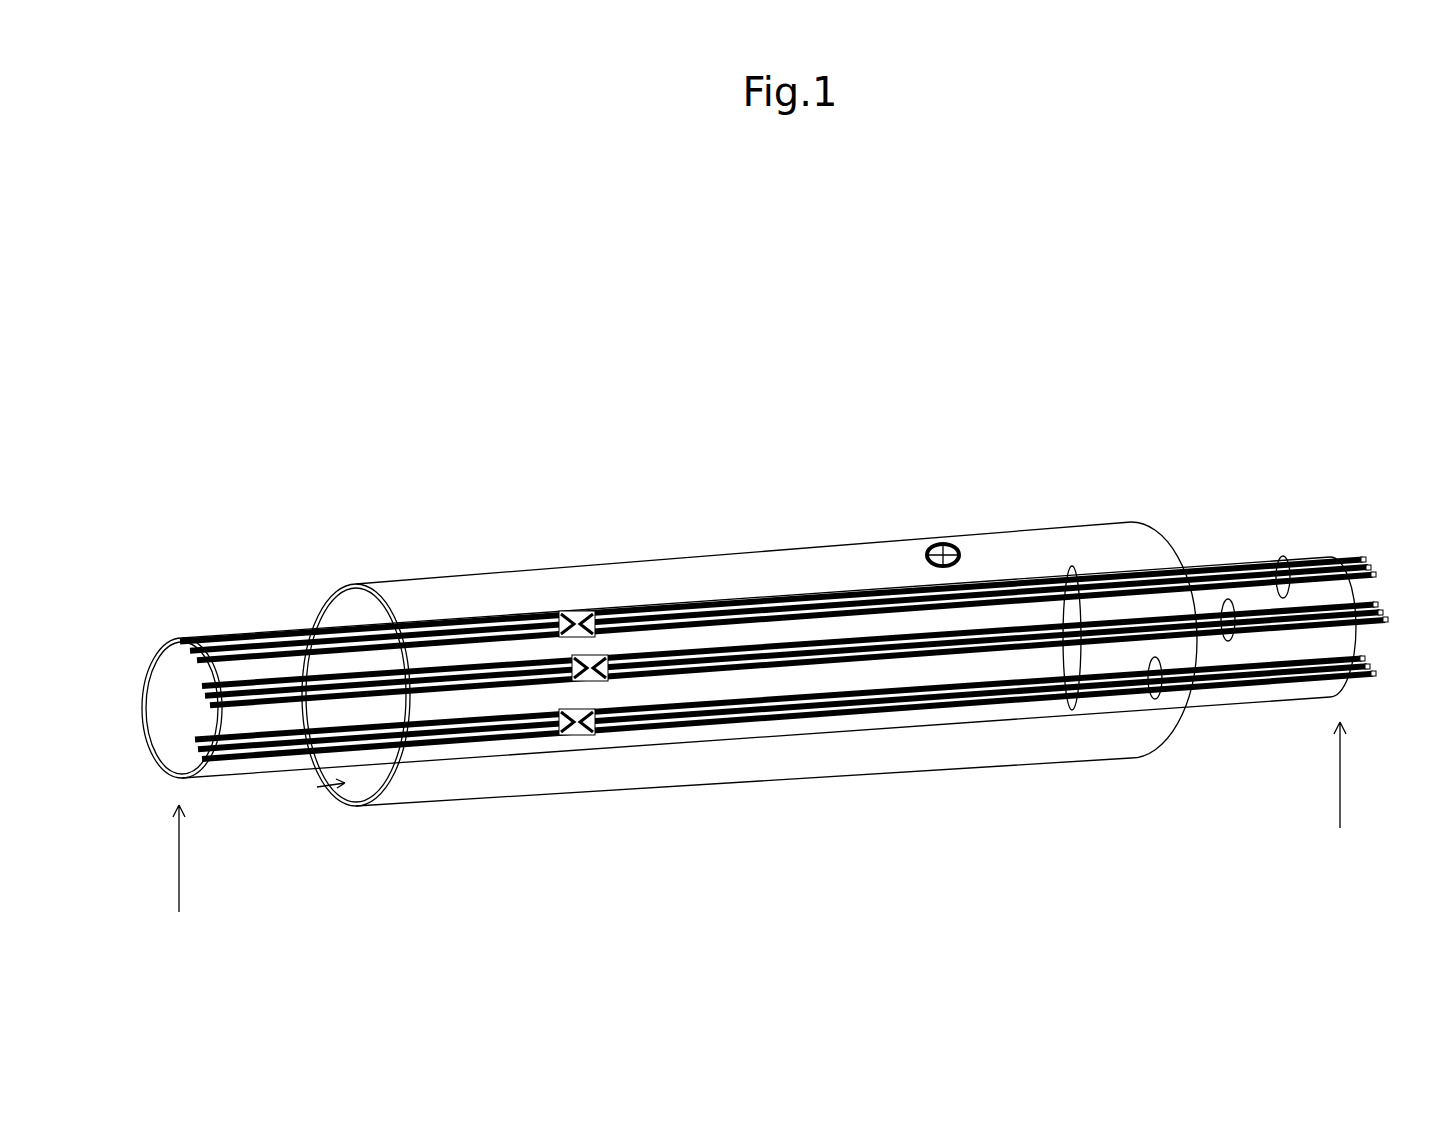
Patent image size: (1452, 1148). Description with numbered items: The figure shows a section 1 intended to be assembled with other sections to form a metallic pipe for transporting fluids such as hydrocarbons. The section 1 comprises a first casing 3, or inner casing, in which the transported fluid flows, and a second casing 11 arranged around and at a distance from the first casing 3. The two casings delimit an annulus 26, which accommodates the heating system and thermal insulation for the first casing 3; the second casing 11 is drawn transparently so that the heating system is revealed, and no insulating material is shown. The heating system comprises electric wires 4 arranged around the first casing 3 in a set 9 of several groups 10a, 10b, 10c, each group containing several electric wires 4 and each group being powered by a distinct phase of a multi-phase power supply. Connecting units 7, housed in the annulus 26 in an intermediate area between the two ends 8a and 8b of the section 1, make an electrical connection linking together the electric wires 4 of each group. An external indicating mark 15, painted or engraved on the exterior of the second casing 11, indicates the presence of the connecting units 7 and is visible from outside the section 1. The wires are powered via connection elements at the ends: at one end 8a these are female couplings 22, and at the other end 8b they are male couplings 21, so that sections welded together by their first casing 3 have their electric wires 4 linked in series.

The section 1 is at (340, 410).
The first casing 3 is at (162, 772).
The electric wires 4 is at (813, 605).
The connecting units 7 is at (578, 612).
The end 8a is at (178, 873).
The other end 8b is at (1340, 789).
The set 9 is at (1078, 585).
The group 10a is at (1284, 556).
The group 10b is at (1227, 598).
The group 10c is at (1158, 700).
The second casing 11 is at (350, 807).
The external indicating mark 15 is at (940, 548).
The male couplings 21 is at (1376, 674).
The female couplings 22 is at (202, 759).
The annulus 26 is at (312, 785).